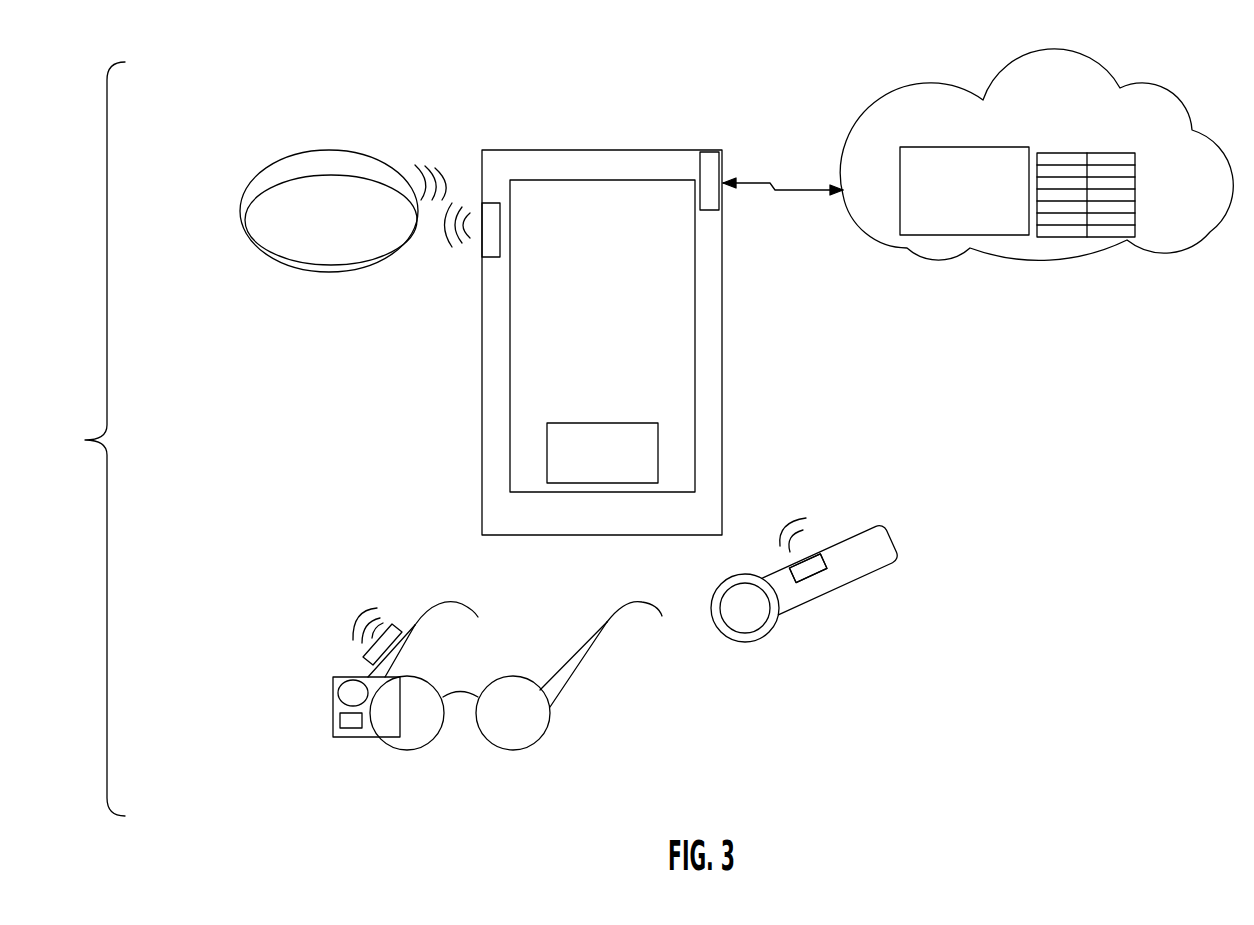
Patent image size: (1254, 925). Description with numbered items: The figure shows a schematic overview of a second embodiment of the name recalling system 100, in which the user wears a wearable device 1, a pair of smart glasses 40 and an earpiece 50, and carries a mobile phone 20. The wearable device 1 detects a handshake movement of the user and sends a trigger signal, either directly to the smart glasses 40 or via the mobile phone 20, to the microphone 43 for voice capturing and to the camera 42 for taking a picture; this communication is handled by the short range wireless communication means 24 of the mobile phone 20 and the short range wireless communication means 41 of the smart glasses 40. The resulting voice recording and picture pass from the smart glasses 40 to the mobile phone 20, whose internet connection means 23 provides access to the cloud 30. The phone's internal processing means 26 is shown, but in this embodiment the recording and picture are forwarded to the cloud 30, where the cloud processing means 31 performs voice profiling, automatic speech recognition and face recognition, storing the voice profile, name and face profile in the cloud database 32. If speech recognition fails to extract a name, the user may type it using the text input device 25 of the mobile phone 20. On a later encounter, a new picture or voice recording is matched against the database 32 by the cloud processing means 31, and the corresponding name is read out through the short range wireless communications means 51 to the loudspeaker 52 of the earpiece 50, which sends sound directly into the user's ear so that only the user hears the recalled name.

The wearable device 1 is at (315, 162).
The mobile phone 20 is at (670, 150).
The internet connection means 23 is at (707, 163).
The short range wireless communication means 24 is at (488, 248).
The text input device 25 is at (660, 465).
The processing means 26 is at (836, 311).
The cloud 30 is at (1122, 88).
The cloud processing means 31 is at (993, 237).
The cloud database 32 is at (1097, 237).
The smart glasses 40 is at (404, 762).
The short range wireless communication means 41 is at (385, 625).
The camera 42 is at (348, 697).
The microphone 43 is at (347, 725).
The earpiece 50 is at (863, 522).
The short range wireless communications means 51 is at (820, 575).
The loudspeaker 52 is at (767, 640).
The name recalling system 100 is at (1124, 669).